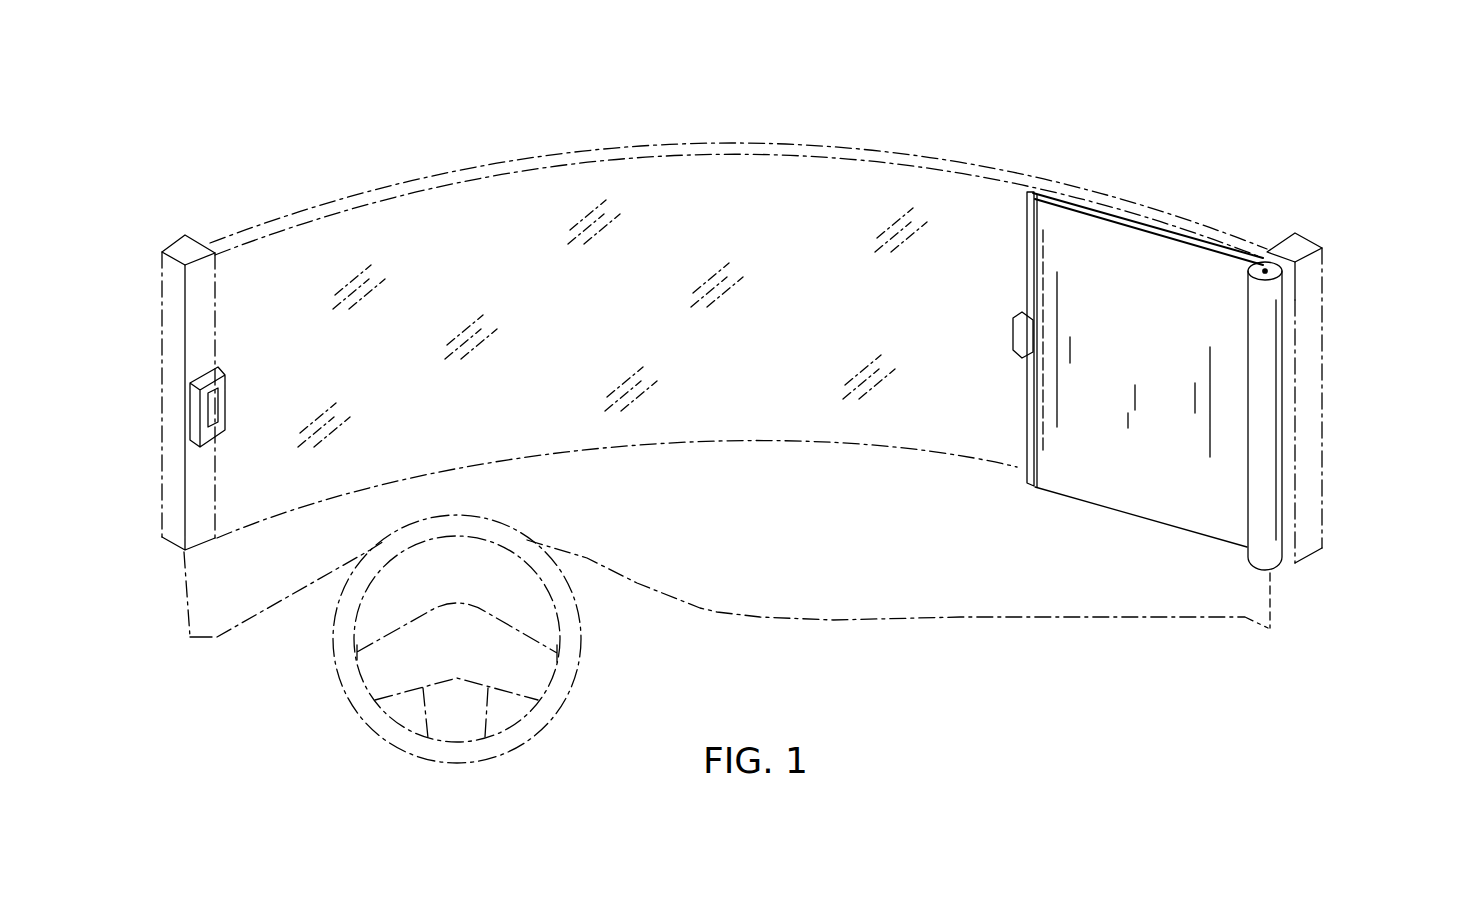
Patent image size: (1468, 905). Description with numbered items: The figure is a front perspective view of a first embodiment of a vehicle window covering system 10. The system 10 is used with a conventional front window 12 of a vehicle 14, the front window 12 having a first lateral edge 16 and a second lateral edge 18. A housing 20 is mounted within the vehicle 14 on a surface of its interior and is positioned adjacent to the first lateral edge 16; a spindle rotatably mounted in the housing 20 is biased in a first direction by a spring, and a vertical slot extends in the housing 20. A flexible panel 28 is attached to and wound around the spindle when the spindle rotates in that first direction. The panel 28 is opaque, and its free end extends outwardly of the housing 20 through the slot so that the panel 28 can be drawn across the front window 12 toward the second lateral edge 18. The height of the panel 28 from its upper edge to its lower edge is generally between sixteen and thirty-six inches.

The vehicle window covering system 10 is at (1296, 220).
The front window 12 is at (392, 283).
The vehicle 14 is at (1257, 613).
The first lateral edge 16 is at (1260, 250).
The second lateral edge 18 is at (223, 247).
The housing 20 is at (1263, 480).
The flexible panel 28 is at (1101, 283).